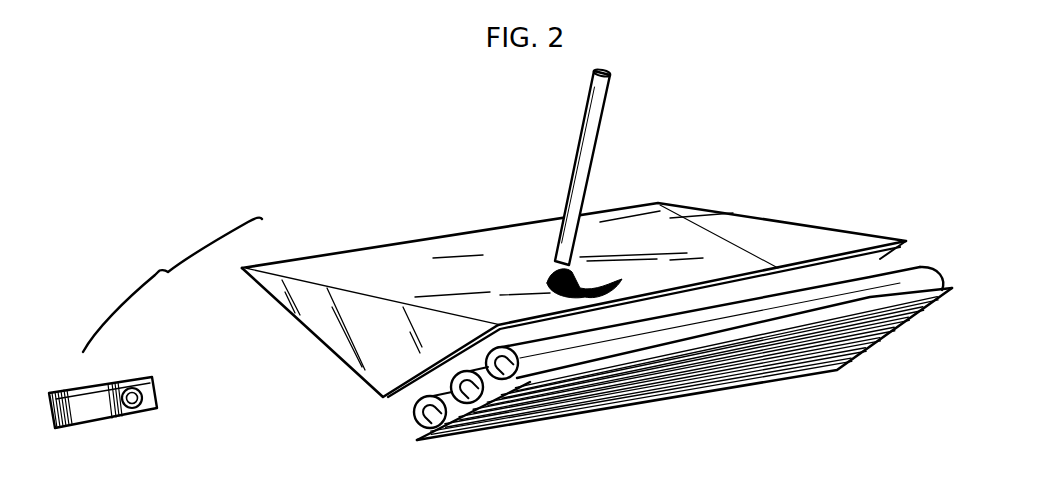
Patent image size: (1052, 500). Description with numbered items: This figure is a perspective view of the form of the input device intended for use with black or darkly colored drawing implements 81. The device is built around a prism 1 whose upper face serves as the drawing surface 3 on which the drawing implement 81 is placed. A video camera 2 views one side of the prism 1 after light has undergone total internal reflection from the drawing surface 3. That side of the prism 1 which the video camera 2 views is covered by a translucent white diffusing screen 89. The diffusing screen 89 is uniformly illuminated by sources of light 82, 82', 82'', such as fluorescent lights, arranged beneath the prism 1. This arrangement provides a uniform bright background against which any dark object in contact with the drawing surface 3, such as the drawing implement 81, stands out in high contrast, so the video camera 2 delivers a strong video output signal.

The prism 1 is at (818, 240).
The video camera 2 is at (77, 418).
The drawing surface 3 is at (433, 282).
The drawing implement 81 is at (543, 278).
The source of light 82 is at (451, 428).
The source of light 82' is at (509, 391).
The source of light 82'' is at (719, 327).
The translucent white diffusing screen 89 is at (906, 257).